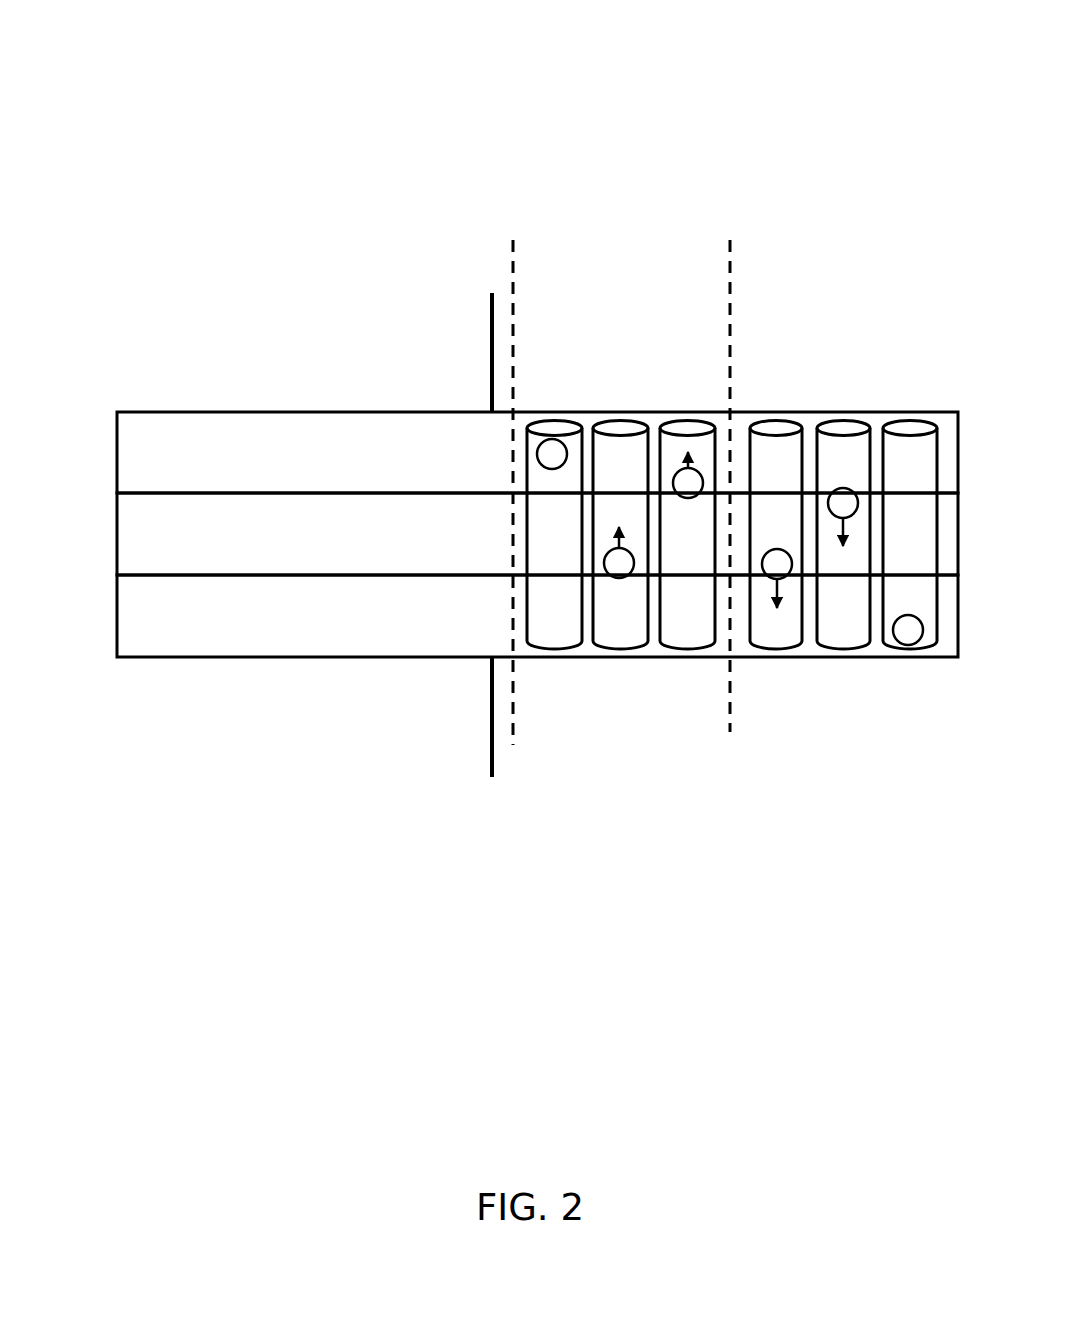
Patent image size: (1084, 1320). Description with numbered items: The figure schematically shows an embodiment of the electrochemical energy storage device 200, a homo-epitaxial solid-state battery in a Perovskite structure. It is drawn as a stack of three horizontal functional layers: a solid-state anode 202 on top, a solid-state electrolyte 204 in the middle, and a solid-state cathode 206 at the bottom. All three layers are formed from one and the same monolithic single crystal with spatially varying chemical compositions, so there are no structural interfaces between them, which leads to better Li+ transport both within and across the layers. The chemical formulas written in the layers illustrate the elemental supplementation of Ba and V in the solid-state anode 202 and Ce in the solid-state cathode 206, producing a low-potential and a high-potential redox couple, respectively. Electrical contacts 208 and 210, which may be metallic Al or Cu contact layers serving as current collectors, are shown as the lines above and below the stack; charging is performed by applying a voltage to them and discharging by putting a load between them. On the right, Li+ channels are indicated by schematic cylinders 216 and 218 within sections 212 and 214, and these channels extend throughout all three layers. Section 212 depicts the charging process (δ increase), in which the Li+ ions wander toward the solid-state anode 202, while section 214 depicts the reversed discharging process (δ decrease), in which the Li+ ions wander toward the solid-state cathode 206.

The electrochemical energy storage device 200 is at (190, 80).
The solid-state anode 202 is at (300, 403).
The solid-state electrolyte 204 is at (114, 534).
The solid-state cathode 206 is at (300, 678).
The electrical contact 208 is at (491, 290).
The electrical contact 210 is at (488, 796).
The section 212 is at (713, 236).
The section 214 is at (935, 236).
The schematic cylinder 216 is at (766, 595).
The schematic cylinder 218 is at (935, 652).